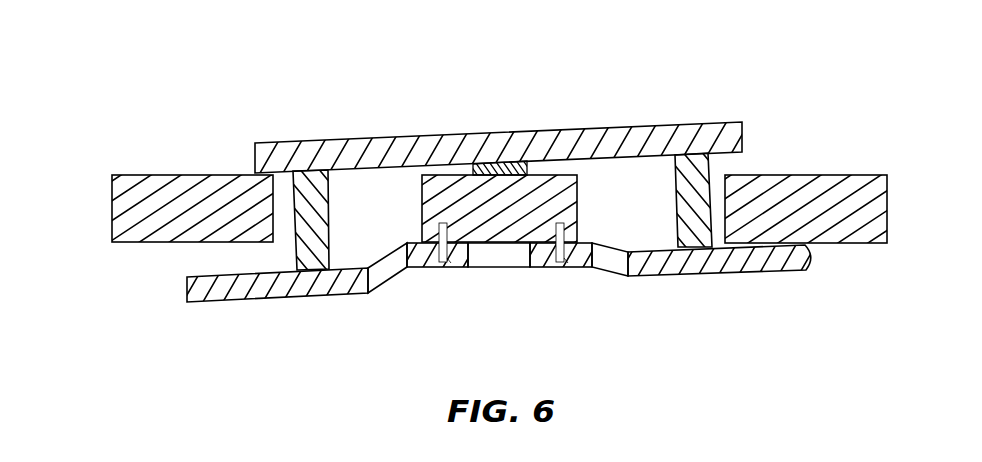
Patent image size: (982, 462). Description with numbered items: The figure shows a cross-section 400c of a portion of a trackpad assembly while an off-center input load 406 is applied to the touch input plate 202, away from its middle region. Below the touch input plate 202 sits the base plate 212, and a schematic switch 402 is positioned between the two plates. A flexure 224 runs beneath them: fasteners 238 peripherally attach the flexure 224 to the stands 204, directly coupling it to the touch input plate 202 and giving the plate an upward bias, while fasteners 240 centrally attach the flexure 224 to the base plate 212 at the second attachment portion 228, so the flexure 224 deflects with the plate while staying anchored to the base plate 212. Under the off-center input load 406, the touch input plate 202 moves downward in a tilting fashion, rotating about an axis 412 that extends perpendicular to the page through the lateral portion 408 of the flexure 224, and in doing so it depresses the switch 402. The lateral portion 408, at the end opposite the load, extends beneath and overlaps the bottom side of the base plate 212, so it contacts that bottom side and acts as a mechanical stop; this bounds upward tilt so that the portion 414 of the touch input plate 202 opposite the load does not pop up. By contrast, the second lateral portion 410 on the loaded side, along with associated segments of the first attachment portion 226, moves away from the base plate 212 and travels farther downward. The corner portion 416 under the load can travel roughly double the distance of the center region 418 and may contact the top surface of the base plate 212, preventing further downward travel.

The cross-section 400c is at (172, 100).
The touch input plate 202 is at (583, 135).
The stands 204 is at (312, 183).
The base plate 212 is at (102, 175).
The flexure 224 is at (482, 231).
The first attachment portion 226 is at (292, 309).
The second attachment portion 228 is at (423, 284).
The fasteners 238 is at (307, 284).
The fasteners 240 is at (441, 259).
The switch 402 is at (495, 158).
The off-center input load 406 is at (274, 132).
The lateral portion 408 is at (787, 260).
The second lateral portion 410 is at (212, 290).
The axis 412 is at (812, 257).
The portion of the touch input plate 414 is at (671, 105).
The corner portion 416 is at (292, 128).
The center region 418 is at (522, 106).